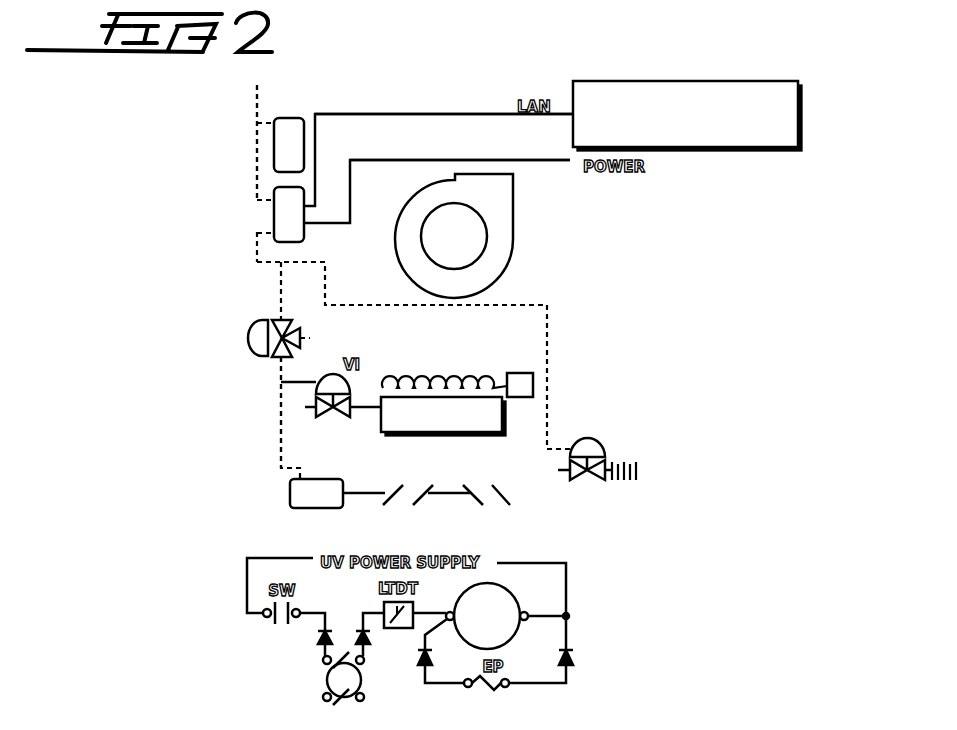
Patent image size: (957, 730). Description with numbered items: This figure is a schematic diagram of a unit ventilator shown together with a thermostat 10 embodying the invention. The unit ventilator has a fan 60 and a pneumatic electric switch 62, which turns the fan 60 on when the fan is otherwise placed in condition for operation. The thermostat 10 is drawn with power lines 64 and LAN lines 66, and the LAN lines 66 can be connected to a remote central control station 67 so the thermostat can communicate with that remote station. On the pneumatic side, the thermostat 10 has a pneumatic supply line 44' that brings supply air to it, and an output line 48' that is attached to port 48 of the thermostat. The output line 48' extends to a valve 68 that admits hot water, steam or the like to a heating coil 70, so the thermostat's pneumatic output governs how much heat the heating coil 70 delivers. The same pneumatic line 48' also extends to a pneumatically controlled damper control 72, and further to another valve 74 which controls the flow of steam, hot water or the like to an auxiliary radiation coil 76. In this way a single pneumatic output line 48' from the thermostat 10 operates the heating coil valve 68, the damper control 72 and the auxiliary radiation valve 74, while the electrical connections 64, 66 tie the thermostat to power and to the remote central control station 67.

The thermostat 10 is at (303, 240).
The pneumatic supply line 44' is at (228, 152).
The output line 48' is at (263, 282).
The port 48 is at (252, 412).
The fan 60 is at (513, 232).
The pneumatic electric switch 62 is at (287, 118).
The power lines 64 is at (393, 160).
The LAN lines 66 is at (393, 113).
The remote central control station 67 is at (723, 81).
The valve 68 is at (336, 372).
The heating coil 70 is at (463, 432).
The damper control 72 is at (318, 479).
The valve 74 is at (590, 438).
The auxiliary radiation coil 76 is at (628, 462).